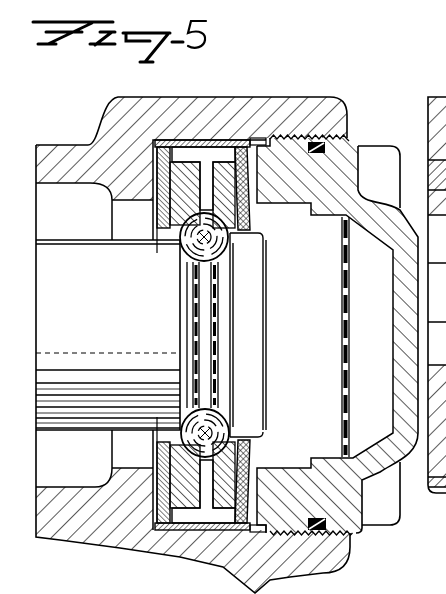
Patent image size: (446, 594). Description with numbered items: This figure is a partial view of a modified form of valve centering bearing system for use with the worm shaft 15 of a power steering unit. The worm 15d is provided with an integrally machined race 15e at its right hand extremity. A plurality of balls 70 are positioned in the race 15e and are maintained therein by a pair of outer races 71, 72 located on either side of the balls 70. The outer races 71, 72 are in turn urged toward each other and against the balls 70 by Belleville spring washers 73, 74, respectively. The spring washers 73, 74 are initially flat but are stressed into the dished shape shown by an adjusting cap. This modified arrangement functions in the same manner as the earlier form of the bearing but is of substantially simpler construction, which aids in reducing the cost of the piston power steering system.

The worm shaft 15 is at (437, 295).
The worm 15d is at (73, 273).
The integrally machined race 15e is at (188, 332).
The balls 70 is at (190, 258).
The outer race 71 is at (185, 185).
The outer race 72 is at (250, 231).
The Belleville spring washer 73 is at (150, 188).
The Belleville spring washer 74 is at (242, 183).